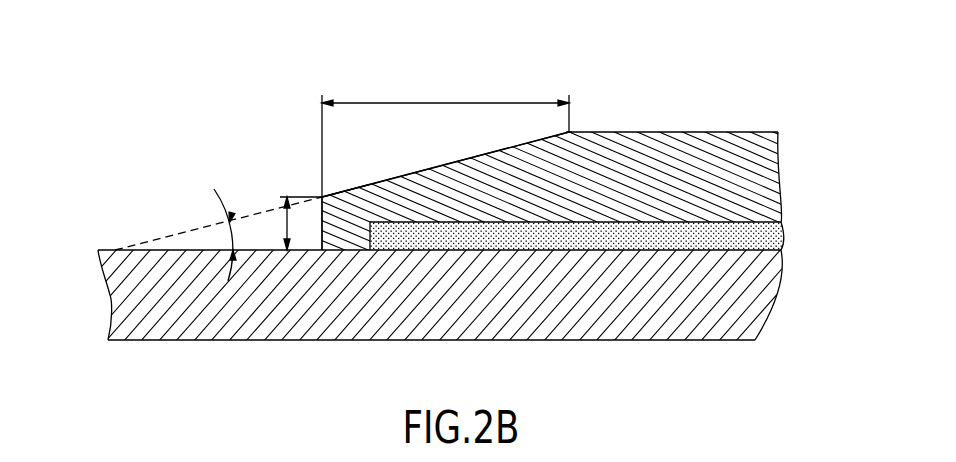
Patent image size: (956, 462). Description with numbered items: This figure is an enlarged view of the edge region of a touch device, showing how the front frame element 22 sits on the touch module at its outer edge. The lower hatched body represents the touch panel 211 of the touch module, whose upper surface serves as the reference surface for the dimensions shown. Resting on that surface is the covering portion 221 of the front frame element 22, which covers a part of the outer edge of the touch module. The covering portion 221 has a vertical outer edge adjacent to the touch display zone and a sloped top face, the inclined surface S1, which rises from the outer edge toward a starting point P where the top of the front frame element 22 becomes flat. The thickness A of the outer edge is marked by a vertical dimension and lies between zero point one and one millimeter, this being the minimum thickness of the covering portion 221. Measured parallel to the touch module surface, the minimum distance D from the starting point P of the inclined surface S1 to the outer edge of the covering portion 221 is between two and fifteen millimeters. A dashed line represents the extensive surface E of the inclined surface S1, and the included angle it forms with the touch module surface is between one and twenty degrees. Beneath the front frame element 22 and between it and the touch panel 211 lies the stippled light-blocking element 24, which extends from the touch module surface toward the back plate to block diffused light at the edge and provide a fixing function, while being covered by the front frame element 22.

The front frame element 22 is at (767, 177).
The covering portion 221 is at (403, 198).
The light-blocking element 24 is at (768, 240).
The touch panel 211 is at (703, 327).
The inclined surface S1 is at (452, 162).
The starting point of the inclined surface P is at (570, 132).
The minimum distance D is at (445, 137).
The thickness of the outer edge A is at (301, 223).
The extensive surface E is at (182, 234).